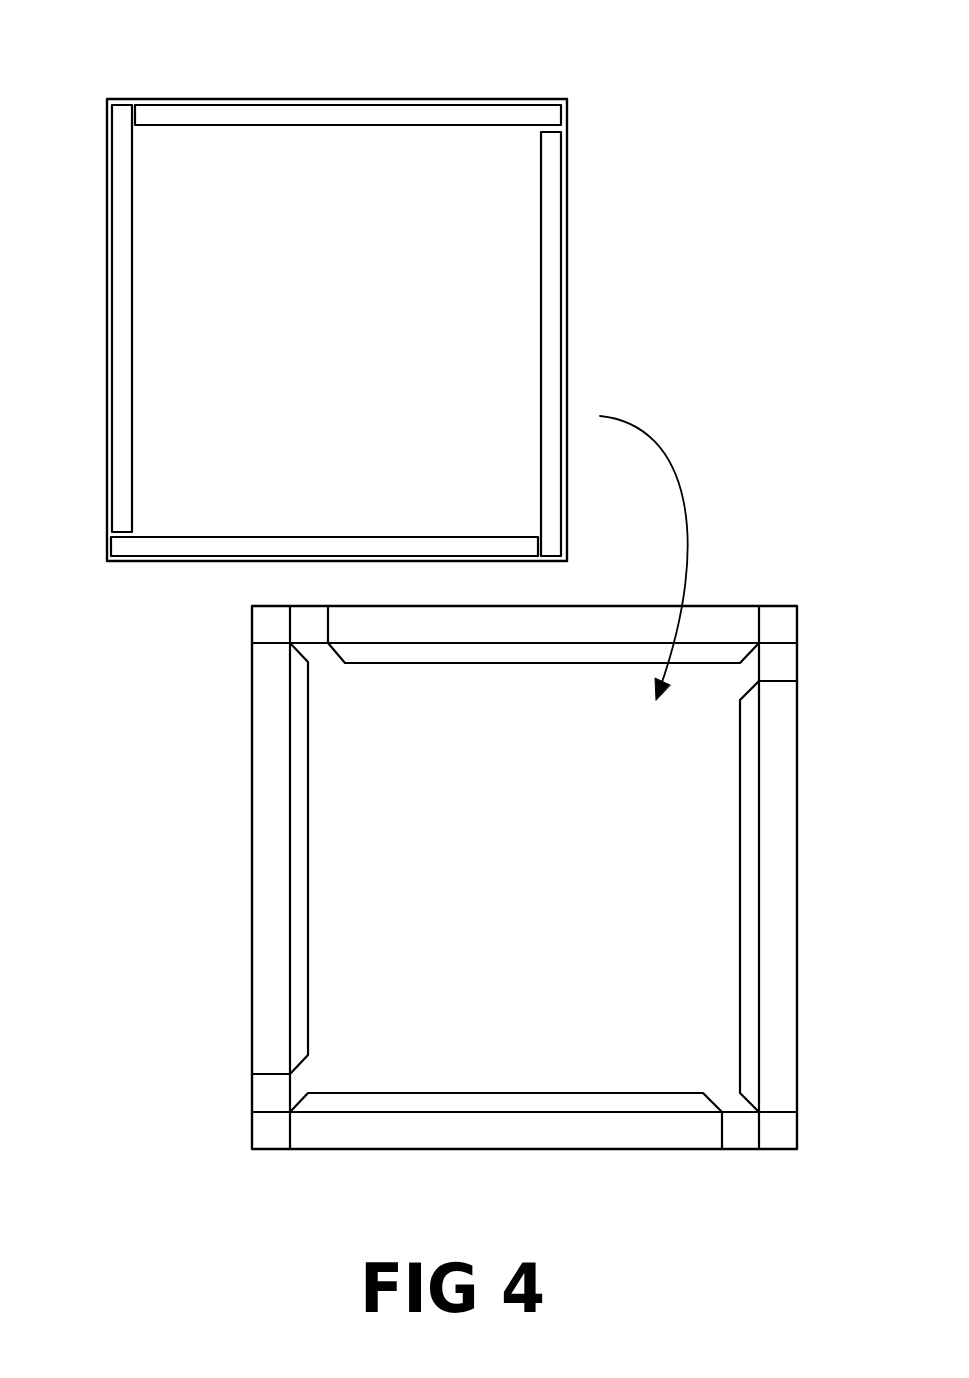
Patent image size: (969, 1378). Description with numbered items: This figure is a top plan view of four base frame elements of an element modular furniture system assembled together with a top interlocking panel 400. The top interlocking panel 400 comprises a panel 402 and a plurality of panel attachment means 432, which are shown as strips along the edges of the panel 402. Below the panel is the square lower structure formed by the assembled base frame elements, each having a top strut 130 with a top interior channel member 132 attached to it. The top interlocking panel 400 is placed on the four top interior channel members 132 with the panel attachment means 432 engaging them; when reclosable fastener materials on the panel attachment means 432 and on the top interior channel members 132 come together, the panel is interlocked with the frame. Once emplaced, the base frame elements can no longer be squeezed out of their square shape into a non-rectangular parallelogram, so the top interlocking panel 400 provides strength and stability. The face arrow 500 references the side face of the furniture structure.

The top interlocking panel 400 is at (437, 328).
The panel 402 is at (358, 345).
The panel attachment means 432 is at (300, 117).
The face arrow 500 is at (472, 808).
The top strut 130 is at (713, 605).
The top interior channel member 132 is at (600, 663).